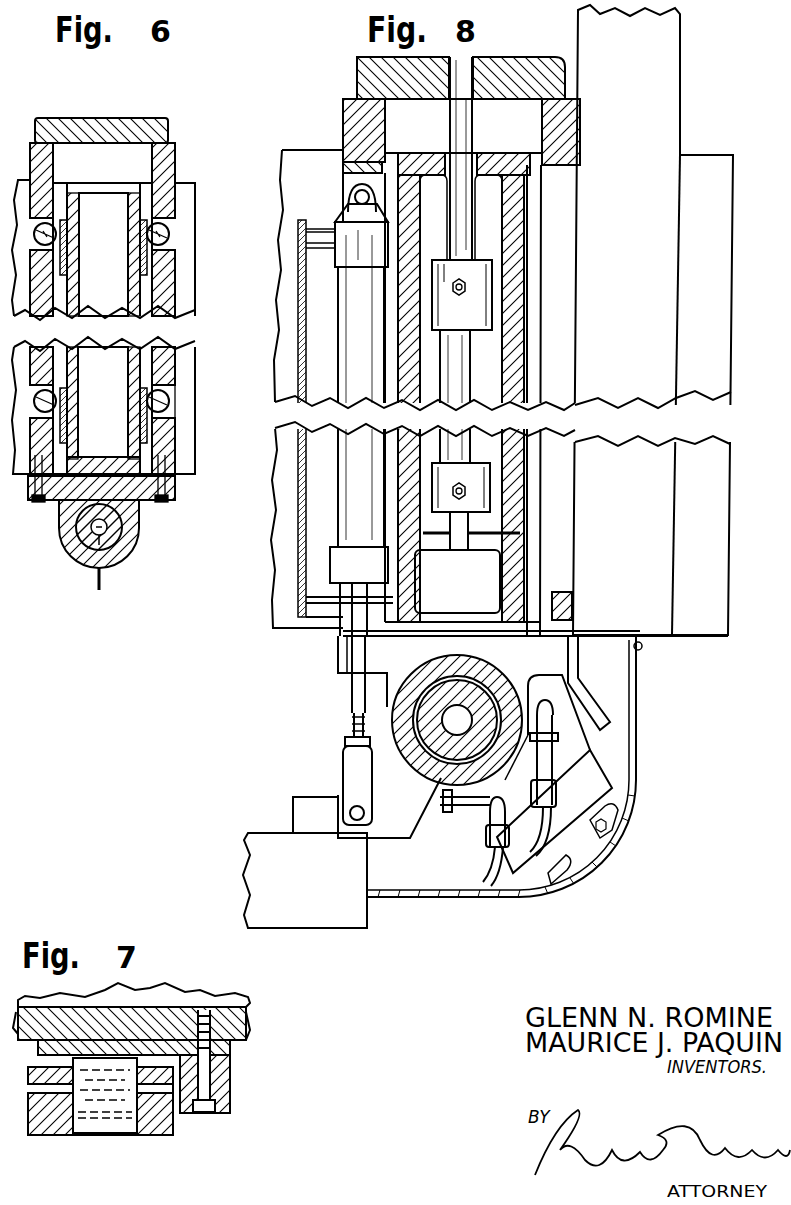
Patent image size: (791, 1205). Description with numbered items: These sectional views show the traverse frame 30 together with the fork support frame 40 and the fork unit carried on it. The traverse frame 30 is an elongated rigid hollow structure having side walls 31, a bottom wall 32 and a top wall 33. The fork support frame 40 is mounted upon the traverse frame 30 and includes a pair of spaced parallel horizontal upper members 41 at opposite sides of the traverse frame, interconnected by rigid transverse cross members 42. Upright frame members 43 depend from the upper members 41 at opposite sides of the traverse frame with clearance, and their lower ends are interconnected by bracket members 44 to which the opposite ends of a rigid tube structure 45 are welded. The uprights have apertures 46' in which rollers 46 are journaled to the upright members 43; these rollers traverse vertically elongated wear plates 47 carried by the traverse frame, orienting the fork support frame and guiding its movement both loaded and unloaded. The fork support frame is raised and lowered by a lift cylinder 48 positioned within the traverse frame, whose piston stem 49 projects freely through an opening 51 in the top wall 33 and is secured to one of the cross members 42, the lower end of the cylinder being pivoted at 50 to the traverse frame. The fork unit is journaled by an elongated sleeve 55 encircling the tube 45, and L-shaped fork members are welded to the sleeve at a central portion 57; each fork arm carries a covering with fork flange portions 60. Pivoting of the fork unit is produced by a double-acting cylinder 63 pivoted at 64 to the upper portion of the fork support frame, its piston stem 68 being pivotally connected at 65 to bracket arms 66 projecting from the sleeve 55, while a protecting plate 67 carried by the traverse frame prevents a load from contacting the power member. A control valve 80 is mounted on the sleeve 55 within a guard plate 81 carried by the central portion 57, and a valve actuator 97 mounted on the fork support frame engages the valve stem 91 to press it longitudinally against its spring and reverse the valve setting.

In FIG. 6, the traverse frame 30 is at (110, 172).
In FIG. 6, the side walls 31 is at (140, 371).
In FIG. 7, the side walls 31 is at (167, 1020).
In FIG. 8, the side walls 31 is at (512, 219).
In FIG. 6, the bottom wall 32 is at (93, 466).
In FIG. 8, the bottom wall 32 is at (452, 620).
In FIG. 6, the top wall 33 is at (111, 192).
In FIG. 8, the top wall 33 is at (494, 158).
In FIG. 6, the fork support frame 40 is at (155, 114).
In FIG. 6, the upper members 41 is at (166, 163).
In FIG. 8, the upper members 41 is at (360, 118).
In FIG. 6, the cross members 42 is at (90, 126).
In FIG. 8, the cross members 42 is at (372, 72).
In FIG. 6, the upright frame members 43 is at (168, 288).
In FIG. 7, the upright frame members 43 is at (152, 1130).
In FIG. 8, the upright frame members 43 is at (565, 276).
In FIG. 6, the bracket members 44 is at (148, 500).
In FIG. 8, the bracket members 44 is at (340, 653).
In FIG. 6, the tube structure 45 is at (112, 548).
In FIG. 8, the tube structure 45 is at (440, 710).
In FIG. 6, the rollers 46 is at (134, 311).
In FIG. 7, the rollers 46 is at (100, 1117).
In FIG. 6, the apertures 46' is at (194, 412).
In FIG. 7, the apertures 46' is at (50, 1122).
In FIG. 6, the wear plates 47 is at (140, 264).
In FIG. 7, the wear plates 47 is at (175, 1049).
In FIG. 8, the cylinder 48 is at (462, 361).
In FIG. 8, the piston stem 49 is at (452, 127).
In FIG. 8, the pivot 50 is at (520, 532).
In FIG. 8, the opening 51 is at (470, 152).
In FIG. 8, the sleeve 55 is at (403, 751).
In FIG. 8, the central portion 57 is at (595, 703).
In FIG. 8, the fork flange portions 60 is at (668, 82).
In FIG. 8, the cylinder 63 is at (360, 496).
In FIG. 8, the pivot 64 is at (355, 195).
In FIG. 8, the pivotal connection 65 is at (352, 820).
In FIG. 8, the bracket arms 66 is at (390, 831).
In FIG. 8, the protecting plate 67 is at (298, 559).
In FIG. 8, the stem 68 is at (356, 687).
In FIG. 8, the control valve 80 is at (570, 760).
In FIG. 8, the guard plate 81 is at (633, 820).
In FIG. 8, the valve stem 91 is at (590, 740).
In FIG. 8, the valve actuator 97 is at (590, 707).